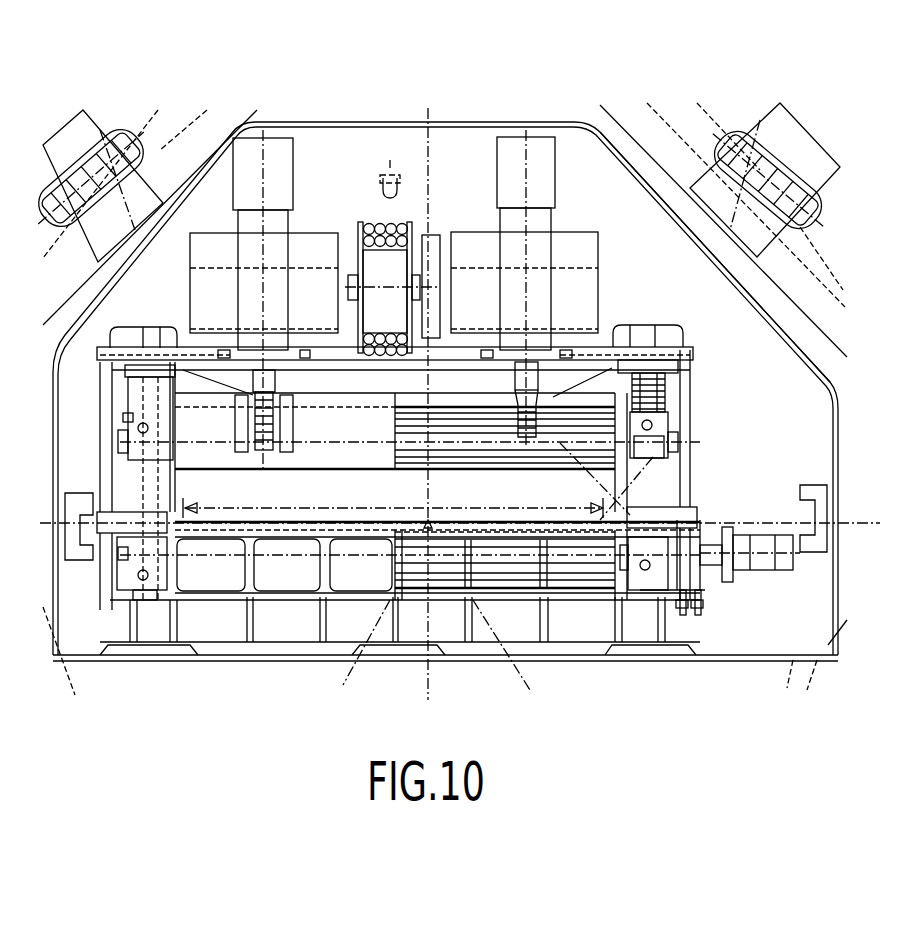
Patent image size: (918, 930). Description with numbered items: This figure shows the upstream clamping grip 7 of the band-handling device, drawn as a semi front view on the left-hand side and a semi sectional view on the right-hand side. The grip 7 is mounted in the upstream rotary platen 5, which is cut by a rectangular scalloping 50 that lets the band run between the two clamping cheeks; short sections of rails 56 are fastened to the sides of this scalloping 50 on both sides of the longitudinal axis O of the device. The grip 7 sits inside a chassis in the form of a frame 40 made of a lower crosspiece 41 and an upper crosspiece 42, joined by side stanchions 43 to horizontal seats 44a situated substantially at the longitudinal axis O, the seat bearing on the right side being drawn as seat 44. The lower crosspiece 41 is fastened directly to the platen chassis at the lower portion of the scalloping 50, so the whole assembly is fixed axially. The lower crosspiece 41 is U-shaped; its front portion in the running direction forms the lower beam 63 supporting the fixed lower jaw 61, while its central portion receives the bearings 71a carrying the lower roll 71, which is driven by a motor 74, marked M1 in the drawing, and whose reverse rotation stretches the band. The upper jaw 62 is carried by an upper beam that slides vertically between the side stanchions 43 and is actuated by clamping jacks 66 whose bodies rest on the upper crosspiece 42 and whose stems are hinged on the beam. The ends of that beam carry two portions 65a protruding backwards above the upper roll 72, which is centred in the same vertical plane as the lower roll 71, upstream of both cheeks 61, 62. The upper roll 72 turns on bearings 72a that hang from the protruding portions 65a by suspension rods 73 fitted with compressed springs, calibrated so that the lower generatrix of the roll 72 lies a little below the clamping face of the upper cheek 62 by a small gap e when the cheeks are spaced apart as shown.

The rotary platen 5 is at (655, 172).
The clamping grip 7 is at (698, 465).
The frame 40 is at (101, 369).
The lower crosspiece 41 is at (340, 602).
The upper crosspiece 42 is at (403, 383).
The side stanchions 43 is at (688, 482).
The bracket 44 is at (705, 592).
The horizontal seat 44a is at (147, 528).
The rectangular scalloping 50 is at (588, 170).
The rails 56 is at (77, 505).
The lower jaw 61 is at (217, 530).
The upper jaw 62 is at (105, 460).
The lower beam 63 is at (276, 590).
The protruding portion 65a is at (700, 343).
The clamping jack 66 is at (540, 232).
The lower roll 71 is at (567, 570).
The bearing 71a is at (657, 562).
The upper roll 72 is at (662, 403).
The bearing 72a is at (664, 428).
The suspension rod 73 is at (655, 386).
The motor 74 is at (777, 560).
The motor M1 is at (152, 477).
The gap e is at (406, 515).
The longitudinal axis O is at (428, 524).